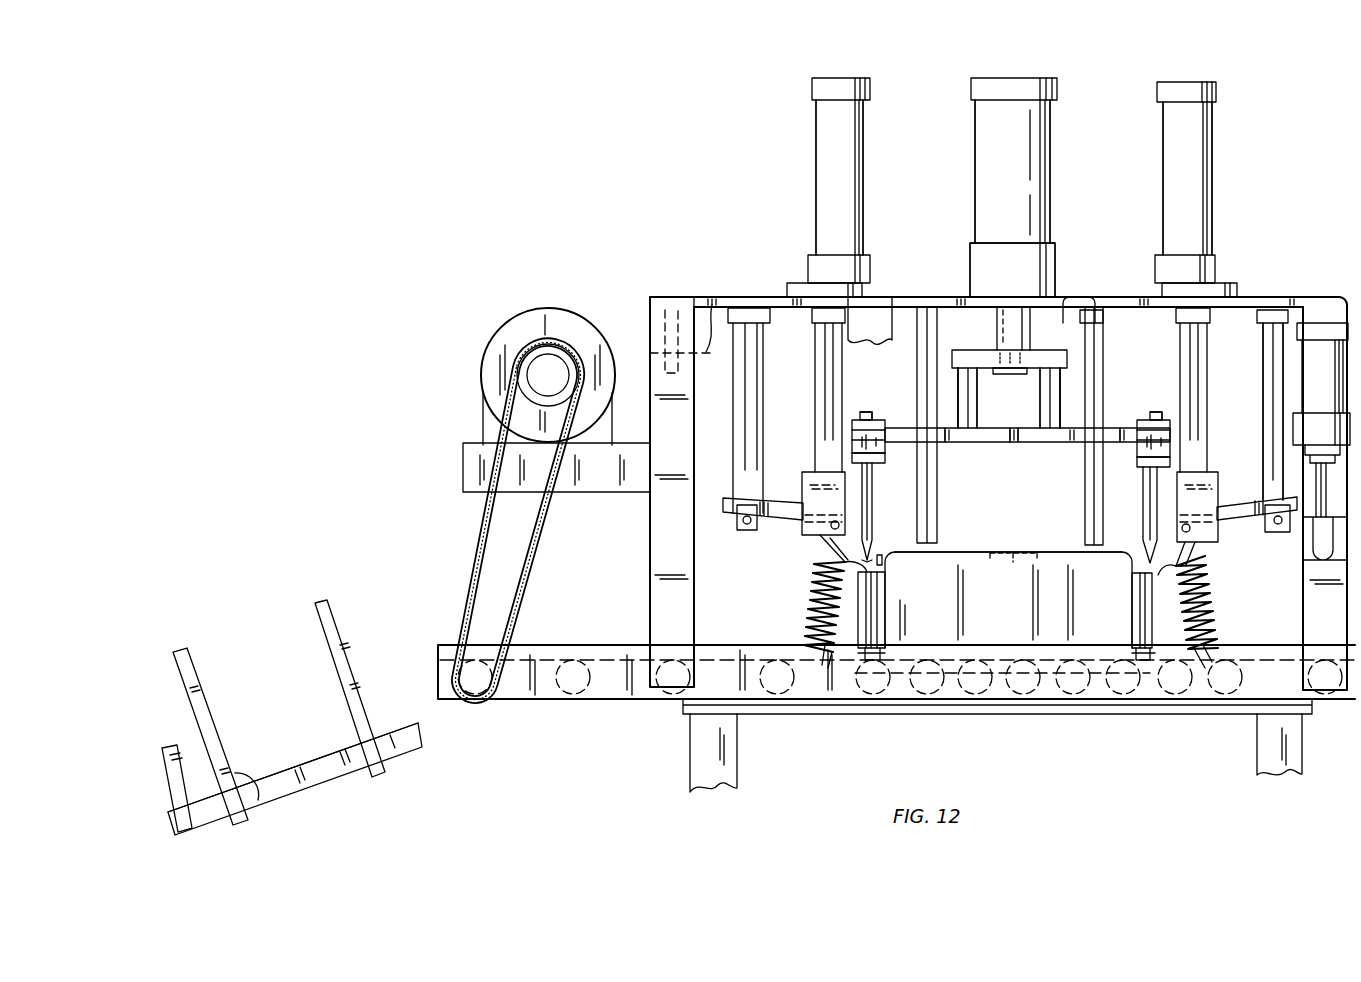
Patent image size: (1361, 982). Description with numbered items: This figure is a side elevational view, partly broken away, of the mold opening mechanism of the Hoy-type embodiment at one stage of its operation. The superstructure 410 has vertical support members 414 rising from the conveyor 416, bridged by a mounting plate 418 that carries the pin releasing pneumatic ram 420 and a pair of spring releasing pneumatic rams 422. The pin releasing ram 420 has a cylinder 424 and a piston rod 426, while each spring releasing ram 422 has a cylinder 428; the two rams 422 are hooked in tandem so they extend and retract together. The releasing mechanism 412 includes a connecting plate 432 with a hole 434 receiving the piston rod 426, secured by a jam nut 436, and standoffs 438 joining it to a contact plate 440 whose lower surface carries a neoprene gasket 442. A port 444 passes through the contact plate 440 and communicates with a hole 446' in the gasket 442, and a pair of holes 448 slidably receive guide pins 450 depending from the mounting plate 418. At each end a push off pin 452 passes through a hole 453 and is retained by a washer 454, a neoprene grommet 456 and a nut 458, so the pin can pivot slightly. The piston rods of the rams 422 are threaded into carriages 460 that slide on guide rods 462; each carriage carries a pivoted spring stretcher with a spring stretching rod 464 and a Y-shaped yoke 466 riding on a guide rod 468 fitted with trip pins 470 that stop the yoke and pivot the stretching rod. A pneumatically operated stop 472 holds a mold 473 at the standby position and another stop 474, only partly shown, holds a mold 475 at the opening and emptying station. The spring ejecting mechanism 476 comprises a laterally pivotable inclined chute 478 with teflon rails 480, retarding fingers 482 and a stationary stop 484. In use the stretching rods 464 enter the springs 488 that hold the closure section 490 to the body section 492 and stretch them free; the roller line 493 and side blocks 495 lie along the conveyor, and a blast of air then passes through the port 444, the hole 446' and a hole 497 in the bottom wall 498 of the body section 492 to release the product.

The superstructure 410 is at (1232, 246).
The releasing mechanism 412 is at (898, 306).
The vertical support members 414 is at (686, 552).
The conveyor 416 is at (1325, 716).
The mounting plate 418 is at (1283, 299).
The pin releasing pneumatic ram 420 is at (1024, 74).
The spring releasing pneumatic rams 422 is at (841, 74).
The cylinder 424 is at (1048, 170).
The piston rod 426 is at (1030, 315).
The cylinder 428 is at (862, 178).
The connecting plate 432 is at (978, 352).
The hole 434 is at (1008, 305).
The jam nut 436 is at (1012, 375).
The standoffs 438 is at (1048, 408).
The contact plate 440 is at (984, 452).
The neoprene gasket 442 is at (1036, 447).
The port 444 is at (1040, 443).
The hole 446' is at (1006, 448).
The holes 448 is at (968, 443).
The guide pins 450 is at (918, 523).
The push off pins 452 is at (866, 512).
The hole 453 is at (877, 438).
The washer 454 is at (872, 463).
The neoprene grommet 456 is at (850, 447).
The nut 458 is at (857, 417).
The carriages 460 is at (803, 532).
The guide rods 462 is at (826, 396).
The spring stretching rod 464 is at (850, 373).
The Y-shaped yoke 466 is at (728, 495).
The guide rod 468 is at (1270, 340).
The trip pins 470 is at (740, 528).
The pneumatically operated stop 472 is at (1330, 389).
The mold 473 is at (1345, 592).
The pneumatically operated stop 474 is at (884, 562).
The mold 475 is at (798, 597).
The spring ejecting mechanism 476 is at (322, 726).
The inclined chute 478 is at (341, 786).
The teflon rails 480 is at (420, 747).
The retarding fingers 482 is at (336, 640).
The stationary stop 484 is at (196, 818).
The springs 488 is at (812, 563).
The closure section 490 is at (1152, 690).
The body section 492 is at (1012, 629).
The roller shaft line 493 is at (995, 682).
The chamber side blocks 495 is at (878, 613).
The hole 497 is at (1013, 572).
The bottom wall 498 is at (1062, 562).